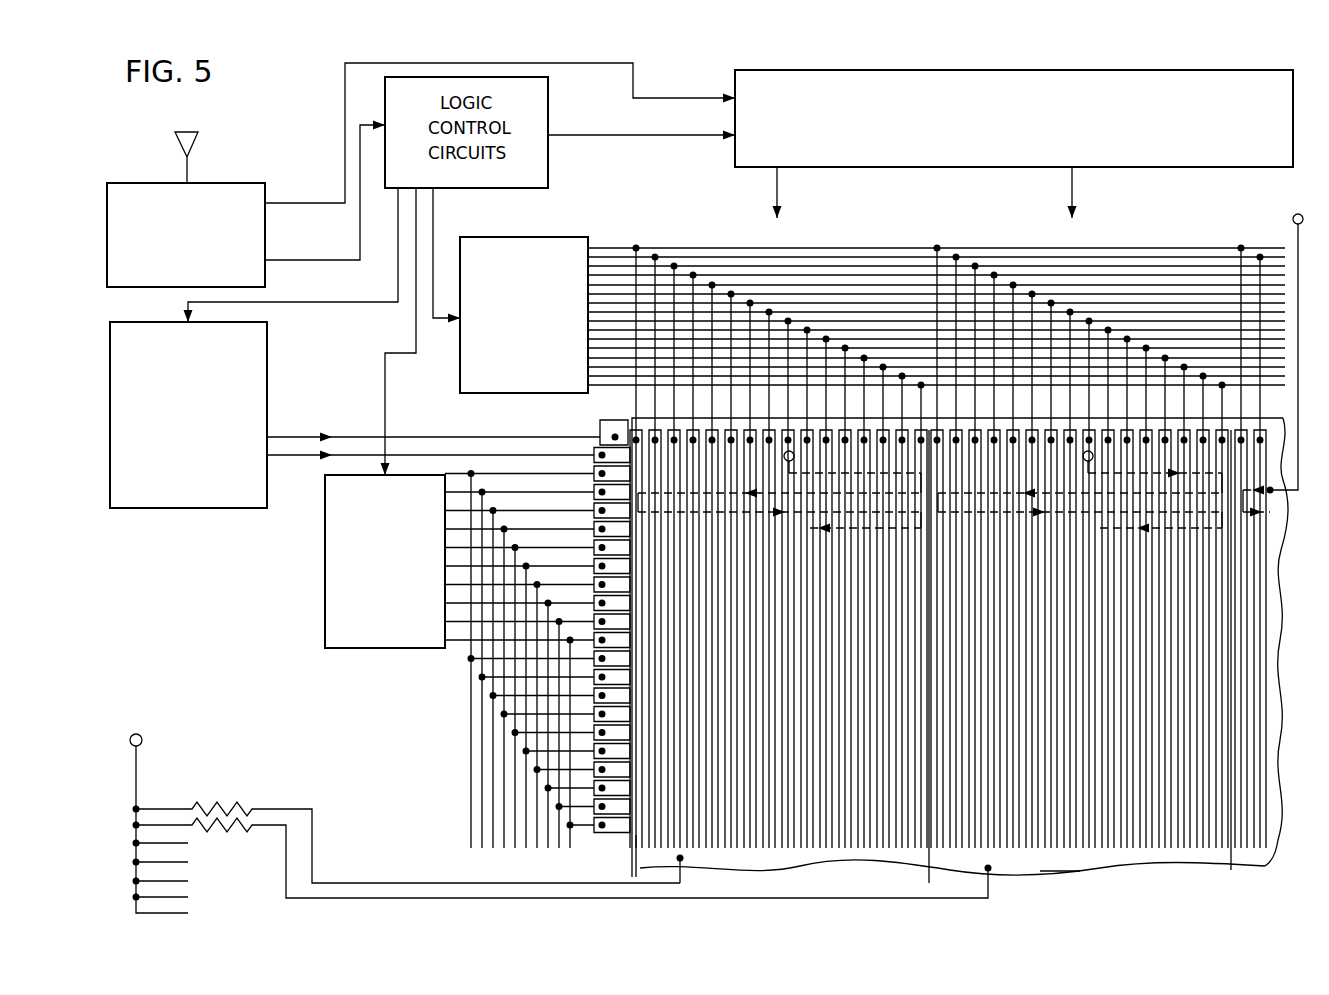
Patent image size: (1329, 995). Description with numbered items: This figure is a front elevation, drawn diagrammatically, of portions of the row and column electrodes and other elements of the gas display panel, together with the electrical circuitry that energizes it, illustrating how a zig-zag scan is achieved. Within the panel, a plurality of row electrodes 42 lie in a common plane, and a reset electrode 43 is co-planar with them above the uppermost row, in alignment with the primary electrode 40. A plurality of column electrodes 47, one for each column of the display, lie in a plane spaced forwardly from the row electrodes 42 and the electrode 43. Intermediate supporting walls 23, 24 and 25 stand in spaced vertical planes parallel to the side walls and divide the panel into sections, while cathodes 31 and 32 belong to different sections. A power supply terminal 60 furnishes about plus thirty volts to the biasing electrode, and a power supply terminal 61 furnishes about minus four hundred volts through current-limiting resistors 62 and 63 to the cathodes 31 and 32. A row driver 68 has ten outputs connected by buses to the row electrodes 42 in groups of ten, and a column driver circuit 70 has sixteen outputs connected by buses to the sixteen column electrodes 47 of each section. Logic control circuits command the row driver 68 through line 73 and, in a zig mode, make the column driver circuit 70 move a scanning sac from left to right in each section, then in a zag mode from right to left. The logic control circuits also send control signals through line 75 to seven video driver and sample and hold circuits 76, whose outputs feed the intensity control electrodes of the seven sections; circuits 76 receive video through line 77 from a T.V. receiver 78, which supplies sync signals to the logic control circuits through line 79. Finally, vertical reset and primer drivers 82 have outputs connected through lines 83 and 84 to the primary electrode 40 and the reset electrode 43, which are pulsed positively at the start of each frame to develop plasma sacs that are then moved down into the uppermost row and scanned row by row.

The intermediate supporting wall 23 is at (628, 870).
The intermediate supporting wall 24 is at (929, 880).
The intermediate supporting wall 25 is at (1231, 870).
The cathode 31 is at (708, 886).
The cathode 32 is at (1062, 874).
The primary electrode 40 is at (944, 630).
The row electrode 42 is at (620, 808).
The reset electrode 43 is at (594, 456).
The column electrode 47 is at (775, 852).
The power supply terminal 60 is at (1292, 219).
The power supply terminal 61 is at (143, 741).
The current-limiting resistor 62 is at (215, 806).
The current-limiting resistor 63 is at (222, 832).
The row driver 68 is at (325, 600).
The column driver circuit 70 is at (588, 240).
The line 73 is at (385, 372).
The line 75 is at (612, 136).
The video driver and sample and hold circuits 76 is at (920, 168).
The line 77 is at (343, 100).
The T.V. receiver 78 is at (213, 197).
The line 79 is at (300, 262).
The vertical reset and primer drivers 82 is at (170, 509).
The line 83 is at (278, 436).
The line 84 is at (281, 456).